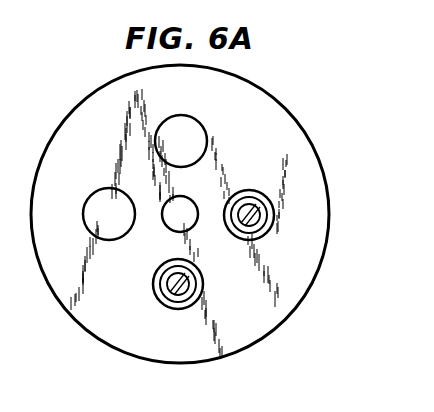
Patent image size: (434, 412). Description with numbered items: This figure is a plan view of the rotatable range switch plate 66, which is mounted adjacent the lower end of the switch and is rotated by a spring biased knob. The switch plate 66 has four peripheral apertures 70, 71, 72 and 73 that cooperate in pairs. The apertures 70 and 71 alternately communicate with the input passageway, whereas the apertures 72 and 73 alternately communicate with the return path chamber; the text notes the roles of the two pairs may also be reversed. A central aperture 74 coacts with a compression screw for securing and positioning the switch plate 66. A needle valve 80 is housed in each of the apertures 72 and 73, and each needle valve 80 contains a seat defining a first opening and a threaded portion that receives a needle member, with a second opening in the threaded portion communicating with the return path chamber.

The rotatable range switch plate 66 is at (302, 130).
The peripheral aperture 70 is at (98, 196).
The peripheral aperture 71 is at (195, 129).
The peripheral aperture 72 is at (267, 229).
The peripheral aperture 73 is at (201, 292).
The central aperture 74 is at (184, 201).
The needle valve 80 is at (251, 198).